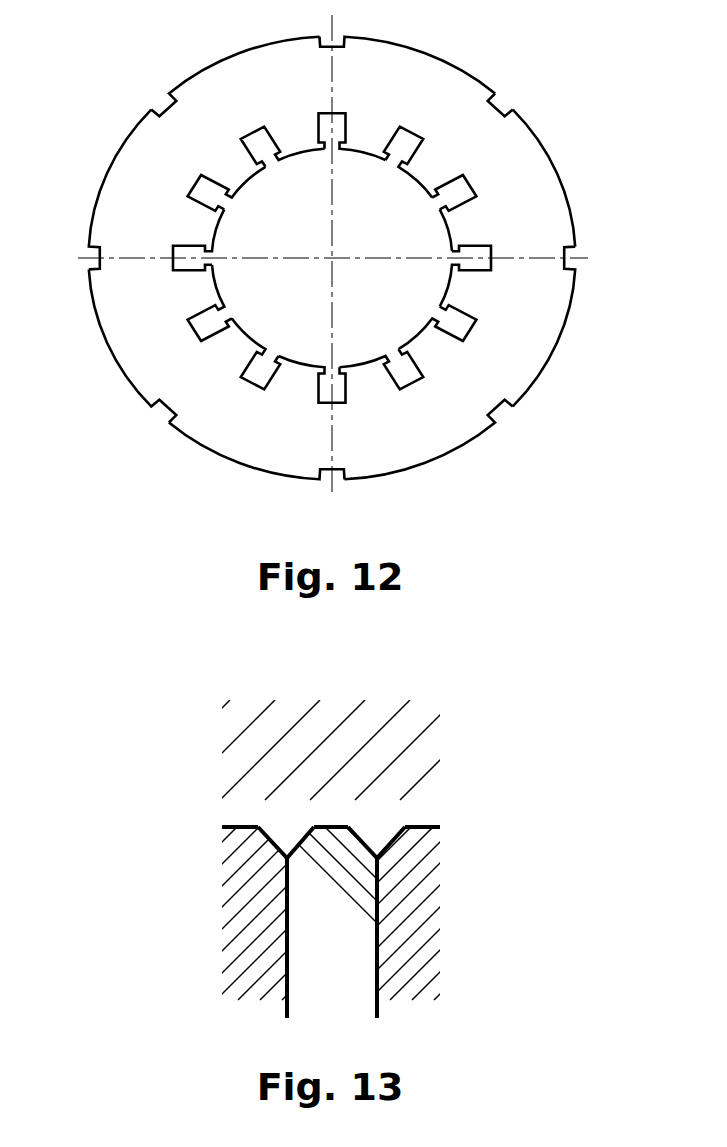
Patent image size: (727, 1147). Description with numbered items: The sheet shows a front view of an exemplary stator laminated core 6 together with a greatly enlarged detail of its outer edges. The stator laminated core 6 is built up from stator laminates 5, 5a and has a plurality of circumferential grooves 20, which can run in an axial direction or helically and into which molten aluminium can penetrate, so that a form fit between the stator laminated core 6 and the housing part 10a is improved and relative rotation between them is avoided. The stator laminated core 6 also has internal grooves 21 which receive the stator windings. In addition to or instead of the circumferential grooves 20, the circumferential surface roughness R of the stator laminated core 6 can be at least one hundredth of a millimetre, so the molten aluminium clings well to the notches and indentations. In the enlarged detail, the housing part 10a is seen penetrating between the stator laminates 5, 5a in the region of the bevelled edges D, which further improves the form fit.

In FIG. 12, the stator laminated core 6 is at (116, 72).
In FIG. 12, the circumferential surface roughness R is at (228, 44).
In FIG. 12, the circumferential grooves 20 is at (502, 100).
In FIG. 12, the internal grooves 21 is at (443, 197).
In FIG. 12, the stator laminate 5a is at (125, 350).
In FIG. 13, the housing part 10a is at (428, 753).
In FIG. 13, the stator laminate 5 is at (358, 942).
In FIG. 13, the bevelled edges D is at (284, 823).